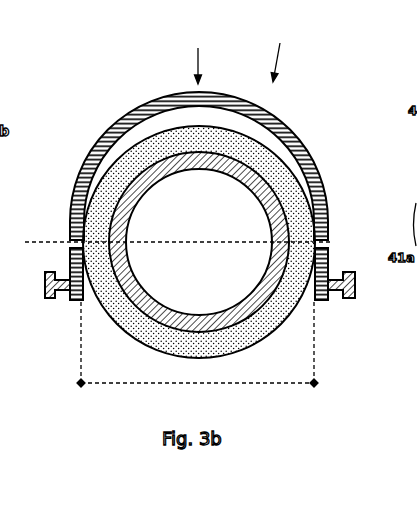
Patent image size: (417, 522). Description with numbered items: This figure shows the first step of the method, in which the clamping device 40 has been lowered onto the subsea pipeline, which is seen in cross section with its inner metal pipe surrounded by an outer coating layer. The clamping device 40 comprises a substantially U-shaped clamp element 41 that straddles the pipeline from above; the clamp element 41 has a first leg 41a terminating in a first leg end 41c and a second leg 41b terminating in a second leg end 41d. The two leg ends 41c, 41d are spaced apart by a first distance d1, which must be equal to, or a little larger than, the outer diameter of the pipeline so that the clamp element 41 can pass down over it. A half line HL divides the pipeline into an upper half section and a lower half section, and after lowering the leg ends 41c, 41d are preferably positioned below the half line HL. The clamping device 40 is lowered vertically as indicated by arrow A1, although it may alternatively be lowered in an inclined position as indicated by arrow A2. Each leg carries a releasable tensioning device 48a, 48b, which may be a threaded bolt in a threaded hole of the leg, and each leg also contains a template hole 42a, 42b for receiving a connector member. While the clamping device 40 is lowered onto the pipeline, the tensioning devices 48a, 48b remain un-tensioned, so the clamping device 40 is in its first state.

The clamping device 40 is at (88, 124).
The clamp element 41 is at (138, 108).
The first leg 41a is at (70, 265).
The second leg 41b is at (328, 259).
The first leg end 41c is at (70, 302).
The second leg end 41d is at (325, 303).
The template hole 42a is at (322, 243).
The template hole 42b is at (73, 238).
The releasable tensioning device 48a is at (355, 287).
The releasable tensioning device 48b is at (45, 281).
The half line HL is at (168, 242).
The first distance d1 is at (197, 353).
The arrow A1 is at (183, 66).
The arrow A2 is at (266, 62).